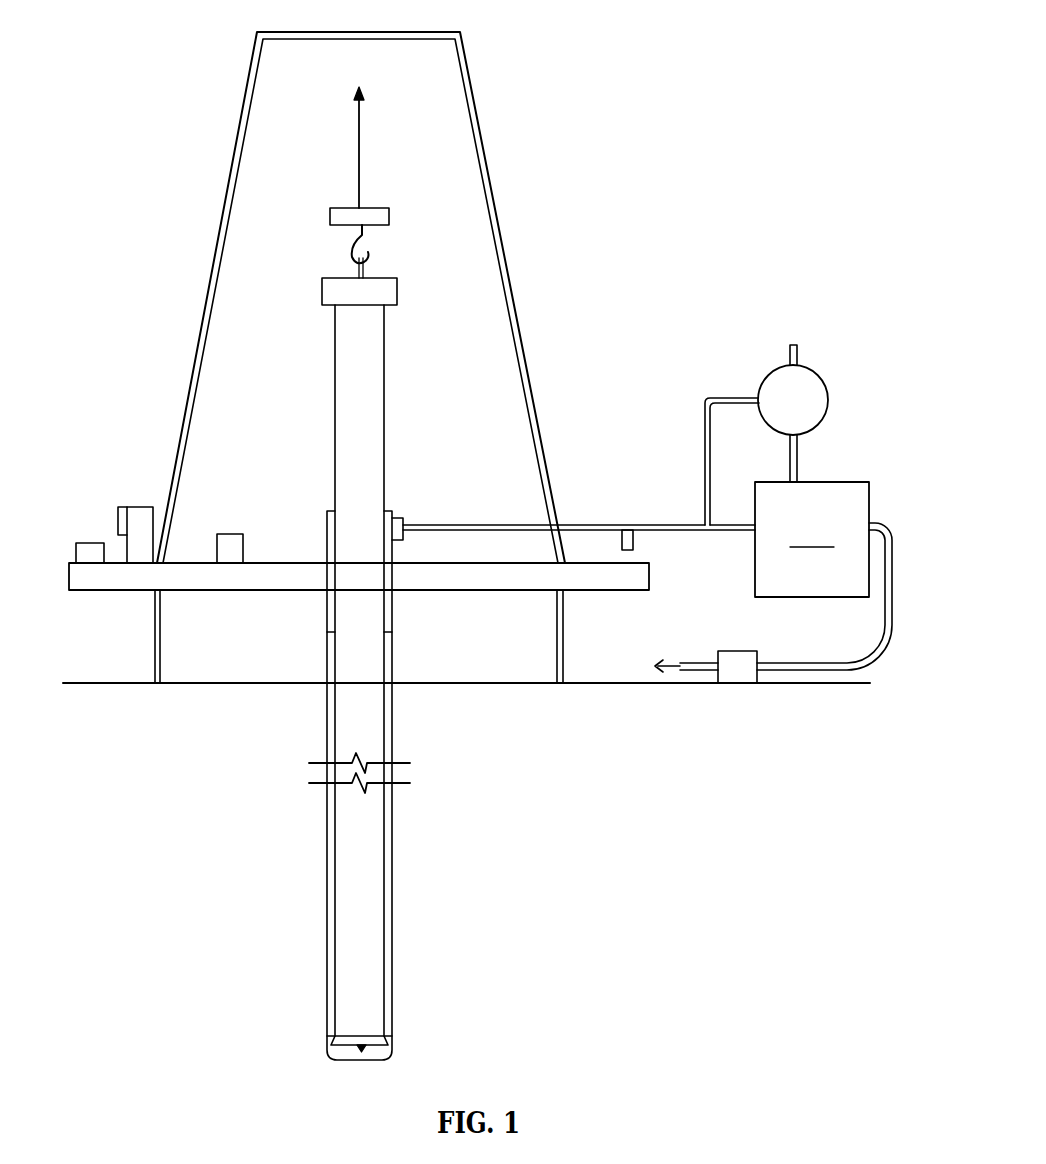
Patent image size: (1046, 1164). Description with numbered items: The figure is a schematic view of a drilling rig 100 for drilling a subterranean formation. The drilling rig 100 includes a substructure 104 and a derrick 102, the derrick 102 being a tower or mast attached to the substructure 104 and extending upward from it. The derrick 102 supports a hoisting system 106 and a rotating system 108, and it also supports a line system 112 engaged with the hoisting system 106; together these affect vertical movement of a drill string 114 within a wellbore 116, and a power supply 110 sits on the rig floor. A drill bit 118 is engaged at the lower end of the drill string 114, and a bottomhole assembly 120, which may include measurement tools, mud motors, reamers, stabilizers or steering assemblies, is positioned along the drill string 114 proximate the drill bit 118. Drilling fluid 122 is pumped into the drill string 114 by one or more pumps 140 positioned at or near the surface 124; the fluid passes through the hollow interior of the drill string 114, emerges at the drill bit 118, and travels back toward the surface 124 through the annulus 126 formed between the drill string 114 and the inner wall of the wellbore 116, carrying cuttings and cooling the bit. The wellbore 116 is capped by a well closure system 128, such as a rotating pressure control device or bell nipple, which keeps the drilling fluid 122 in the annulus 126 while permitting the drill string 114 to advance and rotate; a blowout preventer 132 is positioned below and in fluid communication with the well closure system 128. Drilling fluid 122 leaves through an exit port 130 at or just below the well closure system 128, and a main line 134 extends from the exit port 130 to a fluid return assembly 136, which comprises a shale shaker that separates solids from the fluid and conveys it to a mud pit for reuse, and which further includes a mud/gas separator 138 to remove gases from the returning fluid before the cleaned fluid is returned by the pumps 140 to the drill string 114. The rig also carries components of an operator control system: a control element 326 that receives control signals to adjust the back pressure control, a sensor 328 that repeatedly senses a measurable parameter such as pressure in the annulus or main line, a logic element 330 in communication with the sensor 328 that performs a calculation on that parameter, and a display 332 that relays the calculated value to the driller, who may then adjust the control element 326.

The drilling rig 100 is at (667, 49).
The derrick 102 is at (510, 274).
The substructure 104 is at (82, 591).
The hoisting system 106 is at (392, 236).
The rotating system 108 is at (321, 292).
The power supply 110 is at (223, 534).
The line system 112 is at (358, 153).
The drill string 114 is at (386, 891).
The wellbore 116 is at (393, 838).
The drill bit 118 is at (393, 1045).
The bottomhole assembly 120 is at (397, 1022).
The drilling fluid 122 is at (357, 977).
The surface 124 is at (627, 685).
The annulus 126 is at (333, 849).
The well closure system 128 is at (326, 535).
The exit port 130 is at (400, 518).
The blowout preventer 132 is at (326, 658).
The main line 134 is at (576, 525).
The fluid return assembly 136 is at (823, 576).
The mud/gas separator 138 is at (802, 366).
The pump 140 is at (742, 685).
The control element 326 is at (139, 507).
The sensor 328 is at (634, 548).
The logic element 330 is at (91, 543).
The display 332 is at (118, 513).